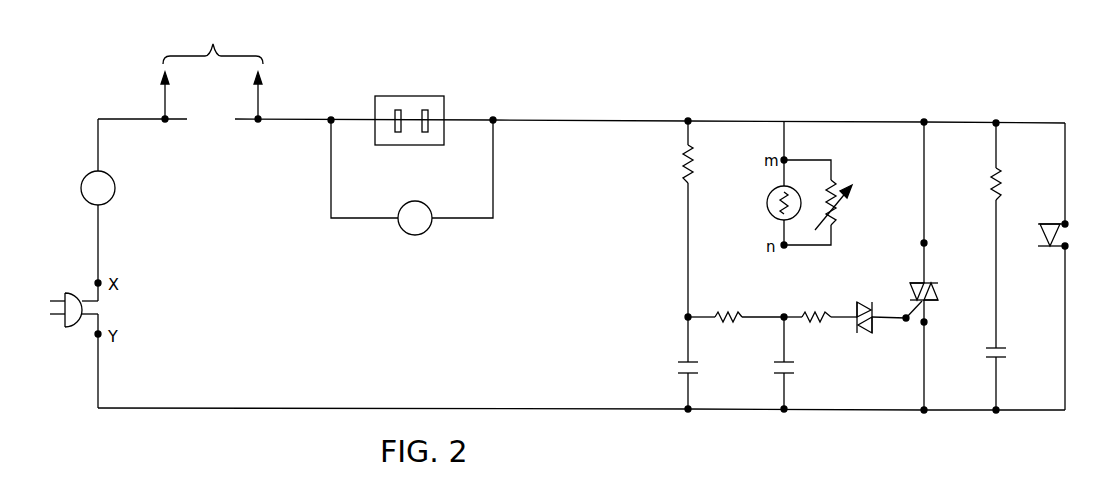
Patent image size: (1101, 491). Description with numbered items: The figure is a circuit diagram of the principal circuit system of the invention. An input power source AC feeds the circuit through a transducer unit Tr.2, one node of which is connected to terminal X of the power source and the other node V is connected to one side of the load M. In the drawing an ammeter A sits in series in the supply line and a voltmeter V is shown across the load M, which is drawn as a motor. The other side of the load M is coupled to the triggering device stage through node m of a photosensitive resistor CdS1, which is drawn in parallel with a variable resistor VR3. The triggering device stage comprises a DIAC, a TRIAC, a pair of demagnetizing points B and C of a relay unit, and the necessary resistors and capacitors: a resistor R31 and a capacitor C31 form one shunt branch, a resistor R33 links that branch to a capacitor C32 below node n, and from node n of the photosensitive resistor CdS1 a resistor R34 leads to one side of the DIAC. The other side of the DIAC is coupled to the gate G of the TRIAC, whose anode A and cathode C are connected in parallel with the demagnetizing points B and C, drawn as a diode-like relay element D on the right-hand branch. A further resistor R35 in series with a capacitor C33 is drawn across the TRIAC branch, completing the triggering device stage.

The transducer unit Tr.2 is at (218, 79).
The load M is at (409, 110).
The anode A is at (98, 188).
The node of the transducer unit V is at (412, 177).
The input power source AC is at (56, 310).
The resistor R31 is at (706, 219).
The resistor R33 is at (736, 330).
The resistor R34 is at (820, 330).
The resistor R35 is at (981, 235).
The capacitor C31 is at (674, 363).
The capacitor C32 is at (799, 363).
The capacitor C33 is at (1012, 377).
The variable resistor VR3 is at (831, 202).
The photosensitive resistor CdS1 is at (795, 202).
The element DIAC is at (869, 304).
The element TRIAC is at (944, 266).
The diode D is at (1059, 266).